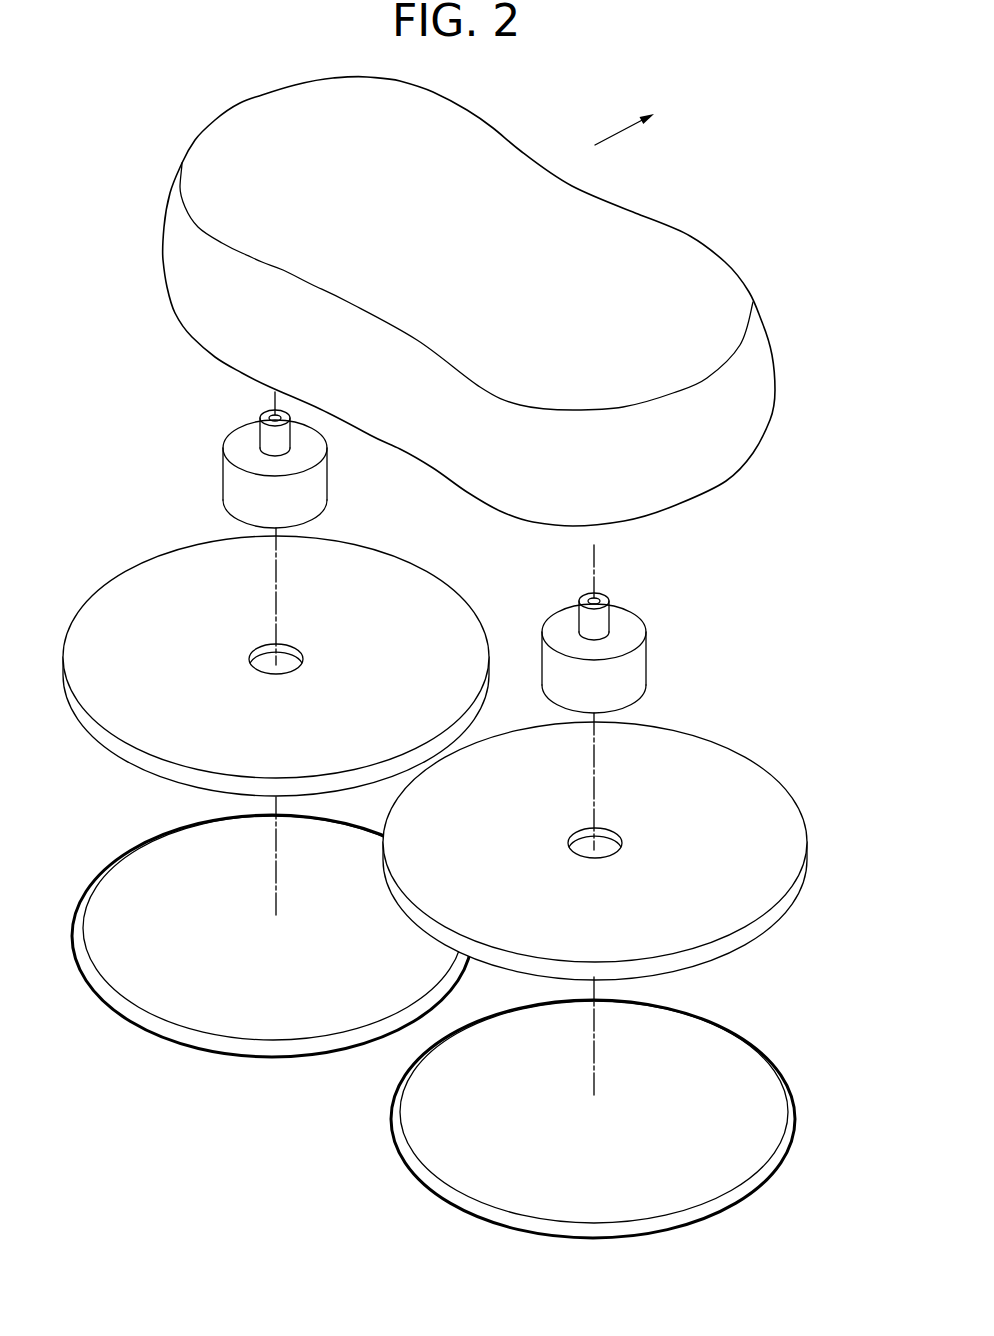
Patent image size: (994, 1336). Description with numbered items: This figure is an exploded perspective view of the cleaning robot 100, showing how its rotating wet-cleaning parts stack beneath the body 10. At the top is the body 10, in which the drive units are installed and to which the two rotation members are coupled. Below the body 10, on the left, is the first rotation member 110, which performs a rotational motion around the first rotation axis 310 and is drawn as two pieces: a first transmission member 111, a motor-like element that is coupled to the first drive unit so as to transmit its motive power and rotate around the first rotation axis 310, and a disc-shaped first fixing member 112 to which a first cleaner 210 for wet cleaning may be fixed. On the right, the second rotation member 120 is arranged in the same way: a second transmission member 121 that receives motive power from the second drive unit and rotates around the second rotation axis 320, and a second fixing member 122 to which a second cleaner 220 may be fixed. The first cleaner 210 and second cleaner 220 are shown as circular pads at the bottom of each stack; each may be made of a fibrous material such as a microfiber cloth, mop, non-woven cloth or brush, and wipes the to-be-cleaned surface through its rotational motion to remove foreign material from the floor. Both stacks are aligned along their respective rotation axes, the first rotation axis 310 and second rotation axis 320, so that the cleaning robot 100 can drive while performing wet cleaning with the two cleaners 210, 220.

The body 10 is at (503, 187).
The cleaning robot 100 is at (748, 172).
The first rotation member 110 is at (259, 654).
The first transmission member 111 is at (233, 478).
The first fixing member 112 is at (100, 603).
The second rotation member 120 is at (612, 821).
The second transmission member 121 is at (638, 665).
The second fixing member 122 is at (753, 777).
The first cleaner 210 is at (188, 1035).
The second cleaner 220 is at (442, 1192).
The first rotation axis 310 is at (277, 588).
The second rotation axis 320 is at (595, 763).